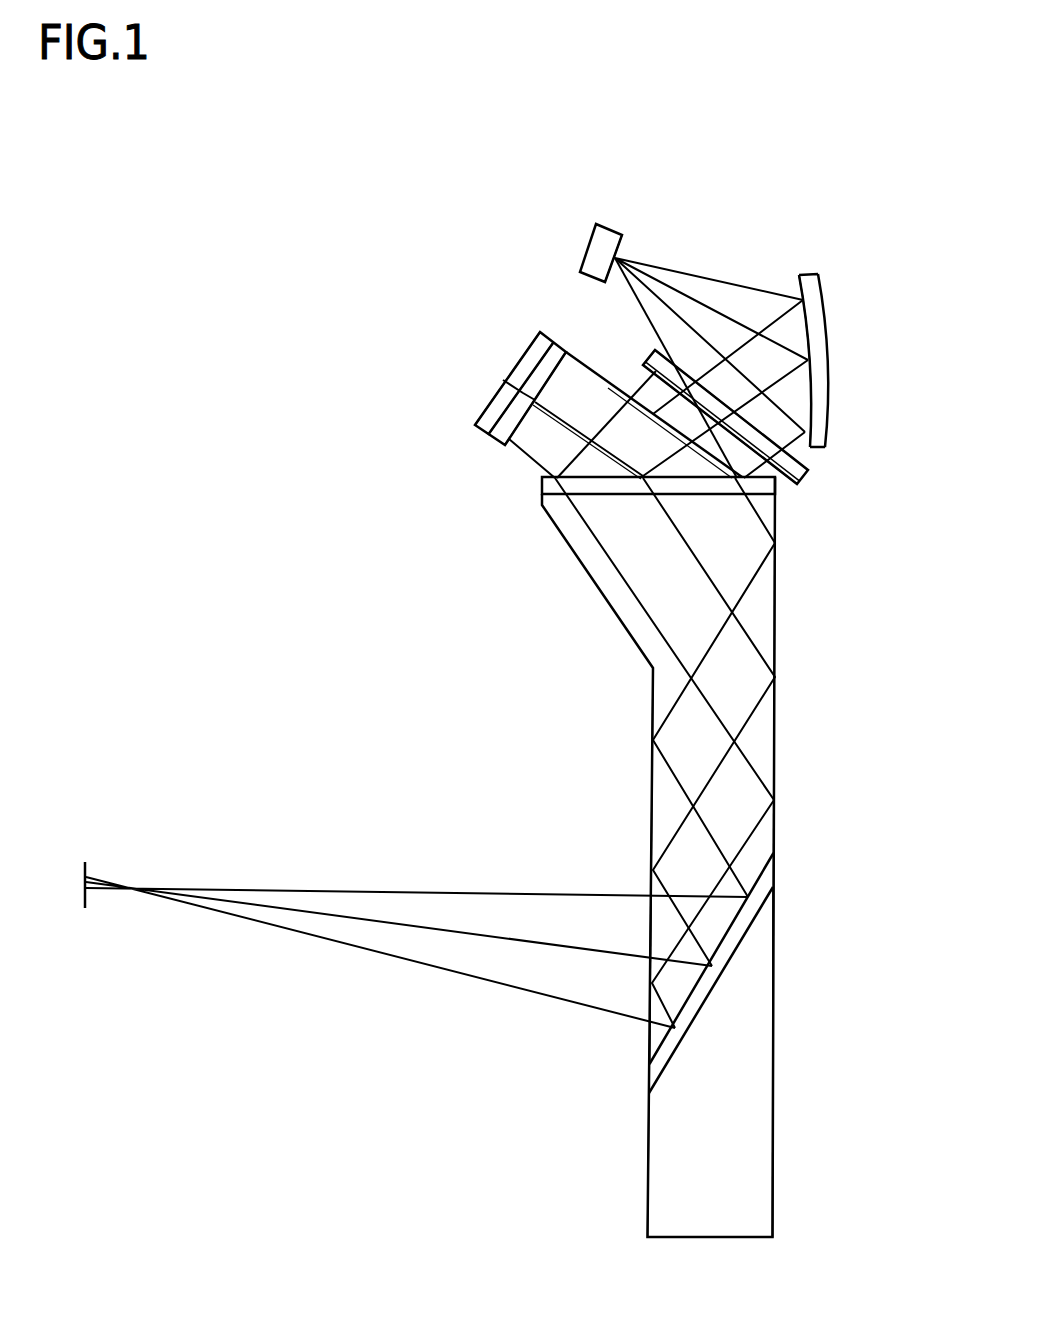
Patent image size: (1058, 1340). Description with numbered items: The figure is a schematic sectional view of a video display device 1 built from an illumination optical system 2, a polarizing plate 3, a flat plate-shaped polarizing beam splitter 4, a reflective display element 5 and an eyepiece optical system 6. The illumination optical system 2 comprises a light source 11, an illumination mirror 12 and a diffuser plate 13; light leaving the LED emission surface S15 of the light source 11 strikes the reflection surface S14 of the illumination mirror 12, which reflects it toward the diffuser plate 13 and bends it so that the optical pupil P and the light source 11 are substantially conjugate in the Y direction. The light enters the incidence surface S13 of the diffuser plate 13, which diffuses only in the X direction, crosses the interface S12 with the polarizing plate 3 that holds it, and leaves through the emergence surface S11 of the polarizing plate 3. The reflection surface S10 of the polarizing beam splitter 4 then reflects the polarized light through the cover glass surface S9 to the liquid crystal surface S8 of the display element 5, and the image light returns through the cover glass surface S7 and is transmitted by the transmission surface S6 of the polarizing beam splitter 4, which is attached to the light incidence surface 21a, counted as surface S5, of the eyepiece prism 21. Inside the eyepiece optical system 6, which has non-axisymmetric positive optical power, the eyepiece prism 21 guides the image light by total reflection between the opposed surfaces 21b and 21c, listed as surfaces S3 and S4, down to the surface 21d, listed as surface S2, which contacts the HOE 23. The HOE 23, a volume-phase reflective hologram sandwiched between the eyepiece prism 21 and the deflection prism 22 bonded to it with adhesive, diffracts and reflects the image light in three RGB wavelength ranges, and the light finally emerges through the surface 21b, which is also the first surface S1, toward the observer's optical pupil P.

The video display device 1 is at (262, 261).
The illumination optical system 2 is at (768, 223).
The polarizing plate 3 is at (805, 482).
The polarizing beam splitter (PBS) 4 is at (765, 488).
The display element 5 is at (497, 381).
The eyepiece optical system 6 is at (438, 640).
The light source 11 is at (607, 238).
The illumination mirror 12 is at (823, 357).
The diffuser plate 13 is at (807, 463).
The eyepiece prism 21 is at (770, 612).
The light incidence surface 21a is at (630, 544).
The surface (total reflection and emergence surface) 21b is at (609, 866).
The surface (total reflection surface) 21c is at (824, 673).
The surface (HOE contact surface) 21d is at (817, 1023).
The deflection prism 22 is at (745, 1125).
The HOE (holographic optical element) 23 is at (740, 935).
The optical pupil P is at (88, 906).
The first surface (image light emergence surface) S1 is at (650, 1041).
The second surface (HOE attachment surface) S2 is at (762, 878).
The third surface (total reflection surface) S3 is at (650, 812).
The fourth surface (total reflection surface) S4 is at (777, 742).
The fifth surface (PBS attachment surface) S5 is at (558, 478).
The transmission surface of PBS S6 is at (483, 442).
The cover glass surface of display element S7 is at (470, 413).
The liquid crystal surface of display element S8 is at (481, 418).
The cover glass surface of display element S9 is at (522, 450).
The reflection surface of PBS S10 is at (535, 462).
The emergence surface of polarizing plate S11 is at (645, 380).
The interface between polarizing plate and diffuser plate S12 is at (645, 345).
The incidence surface of diffuser plate S13 is at (677, 347).
The reflection surface of illumination mirror S14 is at (797, 296).
The LED light emission surface of light source S15 is at (650, 227).